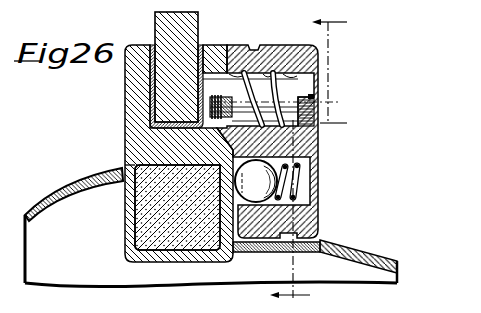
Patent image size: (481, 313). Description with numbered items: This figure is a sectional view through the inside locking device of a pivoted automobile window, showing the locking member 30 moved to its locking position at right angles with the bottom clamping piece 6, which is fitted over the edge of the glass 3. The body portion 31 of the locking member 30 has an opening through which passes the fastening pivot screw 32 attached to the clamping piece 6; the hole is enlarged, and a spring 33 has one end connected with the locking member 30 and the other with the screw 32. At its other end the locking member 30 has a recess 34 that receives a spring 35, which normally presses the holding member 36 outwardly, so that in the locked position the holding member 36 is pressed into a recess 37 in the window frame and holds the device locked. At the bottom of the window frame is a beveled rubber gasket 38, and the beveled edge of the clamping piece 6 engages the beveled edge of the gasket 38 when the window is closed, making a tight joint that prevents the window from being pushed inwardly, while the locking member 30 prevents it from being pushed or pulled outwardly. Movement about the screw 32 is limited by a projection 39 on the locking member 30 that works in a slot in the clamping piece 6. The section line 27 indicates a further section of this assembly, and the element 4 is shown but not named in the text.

The glass 3 is at (198, 223).
The post 4 is at (202, 24).
The clamping piece 6 is at (132, 98).
The section line 27 is at (308, 156).
The locking member 30 is at (322, 181).
The body portion 31 is at (307, 148).
The fastening pivot screw 32 is at (238, 78).
The spring 33 is at (273, 70).
The recess 34 is at (320, 194).
The spring 35 is at (320, 208).
The holding member 36 is at (256, 193).
The recess 37 is at (220, 189).
The beveled rubber gasket 38 is at (136, 222).
The projection 39 is at (220, 133).